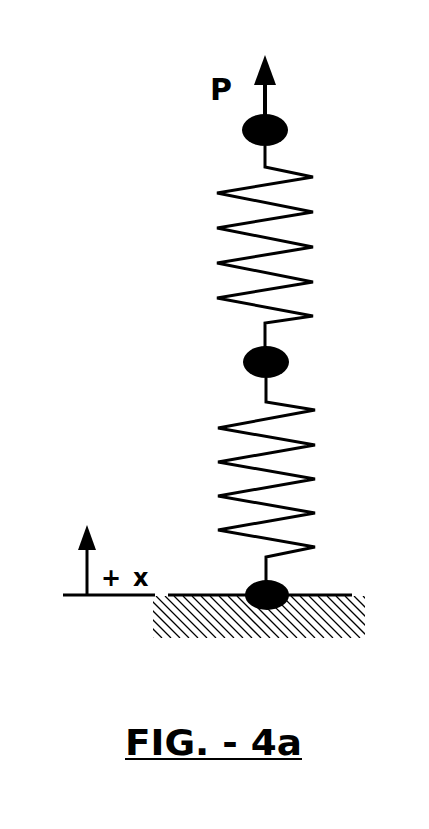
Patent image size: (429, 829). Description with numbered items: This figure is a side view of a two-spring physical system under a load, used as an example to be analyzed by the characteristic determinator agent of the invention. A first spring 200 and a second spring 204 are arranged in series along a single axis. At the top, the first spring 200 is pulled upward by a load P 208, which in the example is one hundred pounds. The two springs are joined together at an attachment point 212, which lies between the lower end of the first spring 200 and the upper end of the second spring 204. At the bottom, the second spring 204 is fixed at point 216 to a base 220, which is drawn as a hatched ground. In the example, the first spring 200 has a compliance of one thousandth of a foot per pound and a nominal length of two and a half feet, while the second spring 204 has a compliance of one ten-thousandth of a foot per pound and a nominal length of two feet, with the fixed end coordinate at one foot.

The load "P" 208 is at (243, 130).
The first spring 200 is at (220, 252).
The attachment point 212 is at (244, 363).
The second spring 204 is at (228, 445).
The fixed point 216 is at (245, 590).
The base 220 is at (298, 637).